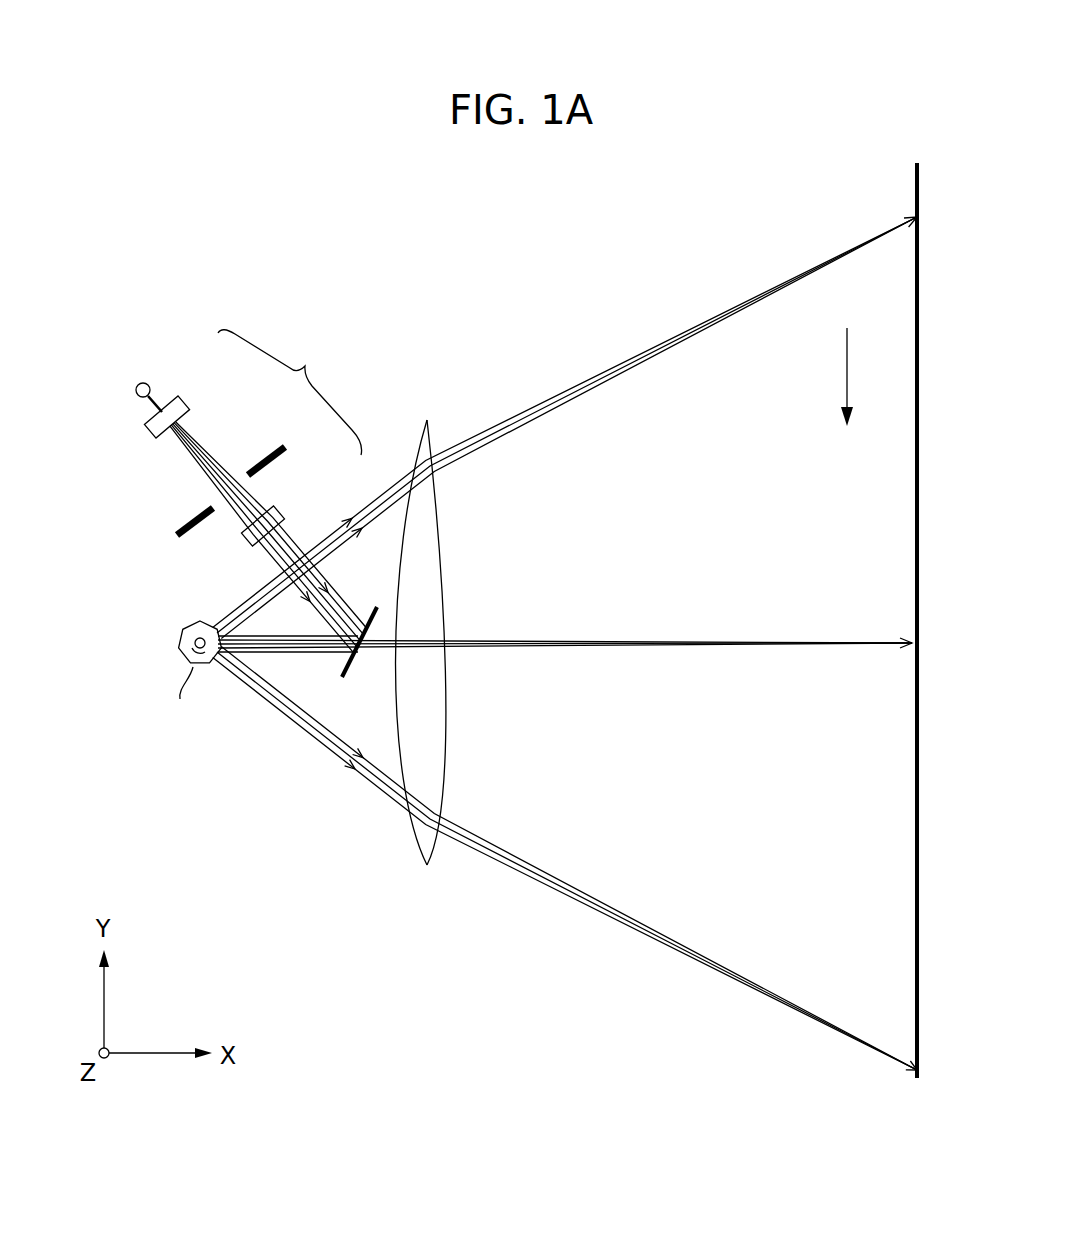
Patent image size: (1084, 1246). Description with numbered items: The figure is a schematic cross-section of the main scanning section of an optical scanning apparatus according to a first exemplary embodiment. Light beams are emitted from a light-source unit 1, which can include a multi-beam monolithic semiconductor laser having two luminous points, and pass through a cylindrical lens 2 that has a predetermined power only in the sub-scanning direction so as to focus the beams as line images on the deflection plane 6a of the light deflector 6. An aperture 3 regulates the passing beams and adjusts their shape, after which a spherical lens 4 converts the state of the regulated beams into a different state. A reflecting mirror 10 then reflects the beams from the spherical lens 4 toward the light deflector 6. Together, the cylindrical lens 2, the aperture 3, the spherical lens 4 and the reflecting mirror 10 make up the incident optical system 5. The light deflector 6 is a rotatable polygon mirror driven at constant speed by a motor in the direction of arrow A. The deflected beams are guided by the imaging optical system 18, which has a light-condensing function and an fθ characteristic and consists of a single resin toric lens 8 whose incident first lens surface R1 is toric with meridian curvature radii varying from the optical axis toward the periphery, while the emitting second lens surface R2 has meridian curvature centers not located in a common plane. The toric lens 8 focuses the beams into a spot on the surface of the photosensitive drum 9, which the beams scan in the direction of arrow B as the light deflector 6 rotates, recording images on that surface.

The light-source unit 1 is at (141, 382).
The cylindrical lens 2 is at (181, 400).
The aperture 3 is at (181, 525).
The spherical lens 4 is at (282, 514).
The incident optical system 5 is at (290, 392).
The light deflector 6 is at (203, 668).
The deflection plane 6a is at (216, 668).
The toric lens 8 is at (434, 635).
The photosensitive drum 9 is at (917, 841).
The reflecting mirror 10 is at (350, 680).
The imaging optical system 18 is at (434, 615).
The arrow A is at (180, 697).
The arrow B is at (857, 377).
The first lens surface R1 is at (413, 767).
The second lens surface R2 is at (447, 753).